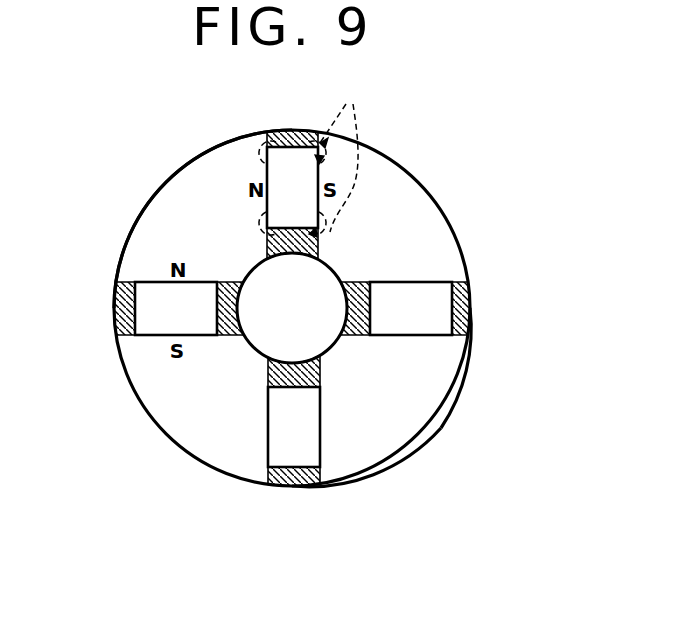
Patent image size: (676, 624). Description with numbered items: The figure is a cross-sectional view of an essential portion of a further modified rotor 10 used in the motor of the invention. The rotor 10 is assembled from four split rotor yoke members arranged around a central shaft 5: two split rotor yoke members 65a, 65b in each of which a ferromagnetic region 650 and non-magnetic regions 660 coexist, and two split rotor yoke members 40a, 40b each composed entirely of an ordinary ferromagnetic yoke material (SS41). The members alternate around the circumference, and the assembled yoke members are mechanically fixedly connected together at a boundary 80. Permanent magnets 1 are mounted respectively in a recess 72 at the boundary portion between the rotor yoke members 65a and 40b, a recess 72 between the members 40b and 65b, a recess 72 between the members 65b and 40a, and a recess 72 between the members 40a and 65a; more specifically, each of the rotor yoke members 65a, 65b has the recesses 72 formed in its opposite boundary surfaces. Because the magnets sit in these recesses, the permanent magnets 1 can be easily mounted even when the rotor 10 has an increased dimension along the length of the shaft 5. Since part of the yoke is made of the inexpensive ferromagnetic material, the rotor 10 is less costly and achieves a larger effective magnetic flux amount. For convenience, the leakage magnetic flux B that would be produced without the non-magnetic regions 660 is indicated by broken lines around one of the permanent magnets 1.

The permanent magnet 1 is at (434, 290).
The shaft 5 is at (256, 348).
The rotor 10 is at (394, 158).
The split rotor yoke member 40a is at (420, 228).
The split rotor yoke member 40b is at (163, 378).
The split rotor yoke member 65a is at (366, 446).
The split rotor yoke member 65b is at (212, 188).
The recess 72 is at (322, 452).
The boundary 80 is at (262, 477).
The ferromagnetic region 650 is at (436, 385).
The non-magnetic region 660 is at (464, 305).
The leakage magnetic flux B is at (310, 154).